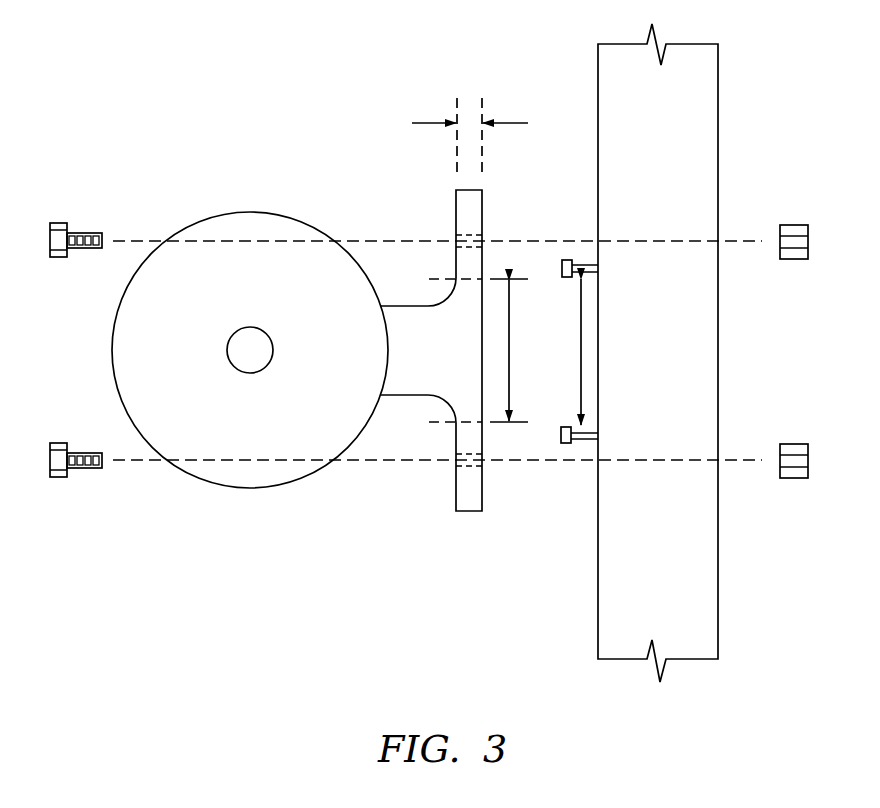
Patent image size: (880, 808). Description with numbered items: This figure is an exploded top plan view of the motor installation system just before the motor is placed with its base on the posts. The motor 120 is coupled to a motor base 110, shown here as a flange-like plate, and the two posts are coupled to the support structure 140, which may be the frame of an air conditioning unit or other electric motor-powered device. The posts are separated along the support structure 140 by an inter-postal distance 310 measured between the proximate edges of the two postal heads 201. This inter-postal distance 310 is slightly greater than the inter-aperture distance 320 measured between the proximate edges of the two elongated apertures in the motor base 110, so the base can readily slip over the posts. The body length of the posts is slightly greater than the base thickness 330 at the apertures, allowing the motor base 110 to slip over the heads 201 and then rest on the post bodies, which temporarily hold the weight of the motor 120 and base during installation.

The motor base 110 is at (418, 378).
The motor 120 is at (130, 377).
The support structure 140 is at (673, 592).
The postal head 201 is at (559, 266).
The inter-postal distance 310 is at (582, 320).
The inter-aperture distance 320 is at (510, 388).
The base thickness 330 is at (470, 98).